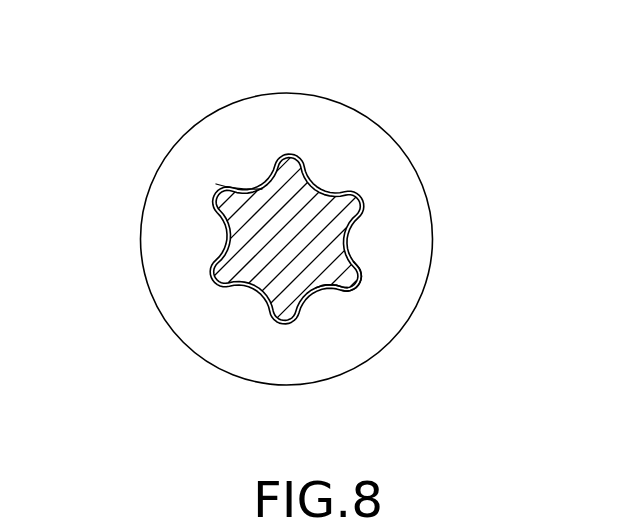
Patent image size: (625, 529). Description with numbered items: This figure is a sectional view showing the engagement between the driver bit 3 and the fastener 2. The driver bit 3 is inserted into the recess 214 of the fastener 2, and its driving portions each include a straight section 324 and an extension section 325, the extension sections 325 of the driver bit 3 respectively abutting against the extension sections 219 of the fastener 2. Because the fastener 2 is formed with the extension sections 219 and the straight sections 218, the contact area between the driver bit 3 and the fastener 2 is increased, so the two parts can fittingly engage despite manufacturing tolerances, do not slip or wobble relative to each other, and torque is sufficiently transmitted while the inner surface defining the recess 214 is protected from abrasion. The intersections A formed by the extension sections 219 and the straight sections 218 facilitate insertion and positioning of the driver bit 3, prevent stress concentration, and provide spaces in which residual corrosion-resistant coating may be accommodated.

The fastener 2 is at (434, 152).
The driver bit 3 is at (345, 244).
The recess 214 is at (266, 199).
The straight sections 218 is at (360, 288).
The extension sections 219 is at (357, 287).
The straight section 324 is at (290, 155).
The extension section 325 is at (302, 153).
The intersections A is at (366, 312).